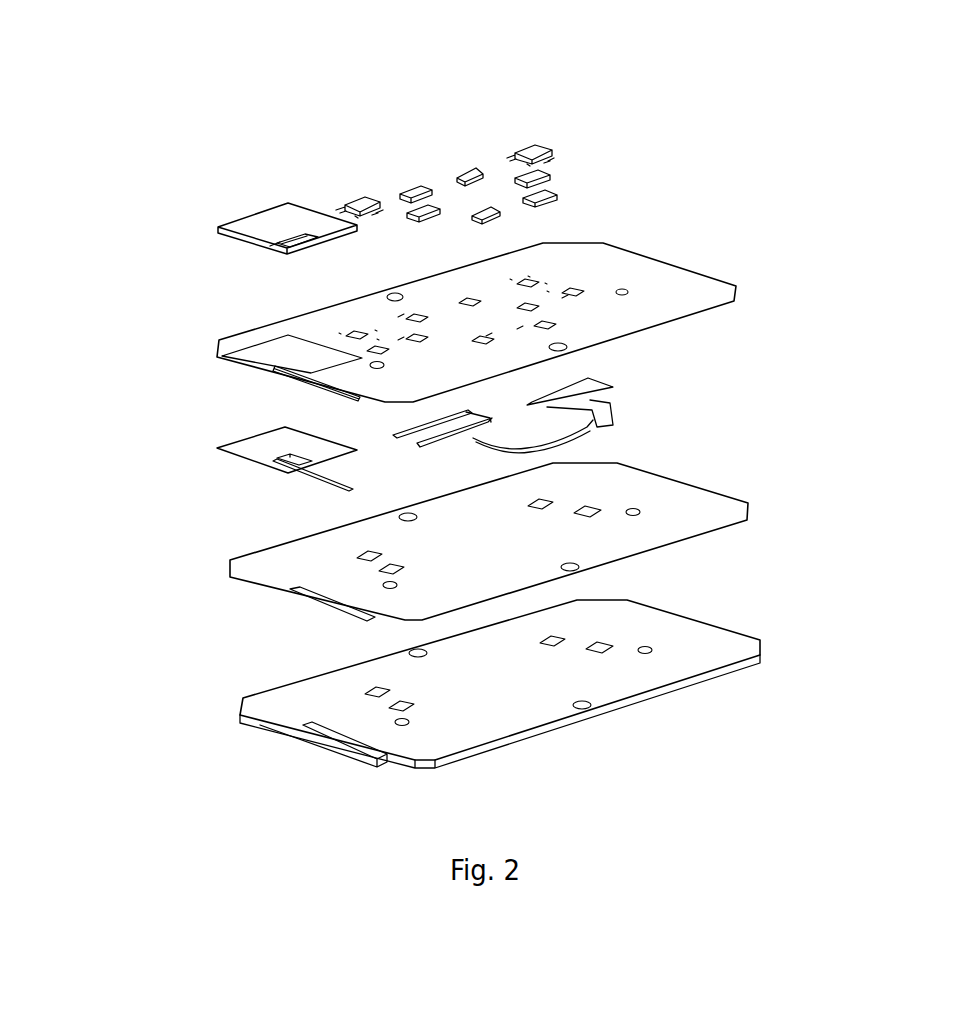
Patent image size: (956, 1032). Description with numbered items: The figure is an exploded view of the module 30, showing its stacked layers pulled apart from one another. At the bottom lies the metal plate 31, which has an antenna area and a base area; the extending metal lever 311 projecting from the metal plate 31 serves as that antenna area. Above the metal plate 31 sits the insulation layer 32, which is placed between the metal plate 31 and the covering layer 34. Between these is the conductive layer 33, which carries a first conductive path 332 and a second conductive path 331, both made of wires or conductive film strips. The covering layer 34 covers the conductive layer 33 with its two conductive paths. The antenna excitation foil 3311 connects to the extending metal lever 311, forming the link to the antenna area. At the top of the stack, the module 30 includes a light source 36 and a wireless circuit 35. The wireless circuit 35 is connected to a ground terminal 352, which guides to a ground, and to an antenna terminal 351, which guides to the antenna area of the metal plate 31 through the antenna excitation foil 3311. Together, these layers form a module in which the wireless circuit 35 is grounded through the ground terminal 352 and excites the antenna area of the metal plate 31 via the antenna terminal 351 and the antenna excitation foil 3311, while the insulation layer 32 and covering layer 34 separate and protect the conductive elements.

The module 30 is at (512, 41).
The metal plate 31 is at (692, 638).
The extending metal lever 311 is at (345, 752).
The insulation layer 32 is at (690, 507).
The conductive layer 33 is at (97, 407).
The second conductive path 331 is at (243, 452).
The antenna excitation foil 3311 is at (317, 483).
The first conductive path 332 is at (405, 432).
The covering layer 34 is at (678, 278).
The wireless circuit 35 is at (265, 218).
The antenna terminal 351 is at (275, 247).
The ground terminal 352 is at (308, 235).
The light source 36 is at (460, 170).